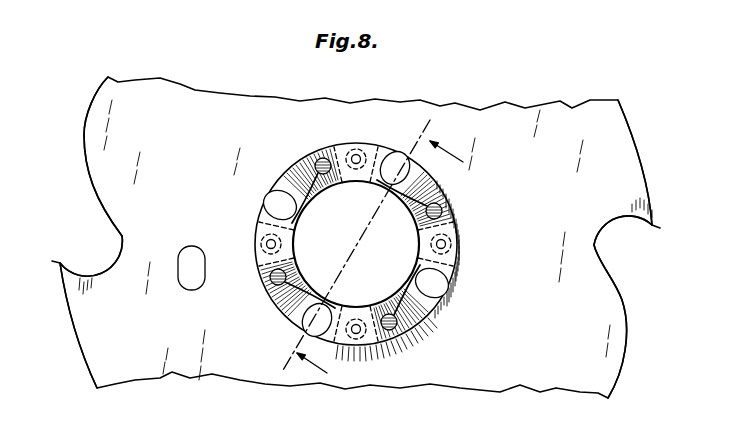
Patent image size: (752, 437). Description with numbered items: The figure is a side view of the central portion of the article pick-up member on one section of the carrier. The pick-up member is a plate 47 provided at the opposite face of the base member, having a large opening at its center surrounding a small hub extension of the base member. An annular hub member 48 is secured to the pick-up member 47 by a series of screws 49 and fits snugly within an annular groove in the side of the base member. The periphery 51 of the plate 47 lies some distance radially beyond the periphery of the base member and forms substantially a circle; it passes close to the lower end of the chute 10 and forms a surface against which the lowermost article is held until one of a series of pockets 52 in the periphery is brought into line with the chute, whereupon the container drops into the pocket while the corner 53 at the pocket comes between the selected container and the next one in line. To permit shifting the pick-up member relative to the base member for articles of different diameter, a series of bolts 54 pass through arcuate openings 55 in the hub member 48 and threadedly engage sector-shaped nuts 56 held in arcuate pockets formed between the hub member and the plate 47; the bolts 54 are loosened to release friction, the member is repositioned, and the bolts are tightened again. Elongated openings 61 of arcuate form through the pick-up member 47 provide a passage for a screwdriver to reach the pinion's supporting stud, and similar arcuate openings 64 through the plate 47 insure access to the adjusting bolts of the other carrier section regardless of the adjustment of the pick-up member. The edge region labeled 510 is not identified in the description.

The chute 10 is at (364, 245).
The plate 47 is at (481, 108).
The annular hub member 48 is at (270, 298).
The screws 49 is at (270, 244).
The periphery 51 is at (648, 184).
The pockets 52 is at (112, 264).
The corner 53 is at (54, 262).
The bolts 54 is at (325, 170).
The arcuate openings 55 is at (300, 190).
The sector-shaped nuts 56 is at (316, 160).
The elongated openings 61 is at (188, 246).
The arcuate openings 64 is at (285, 200).
The bulged edge 510 is at (84, 160).